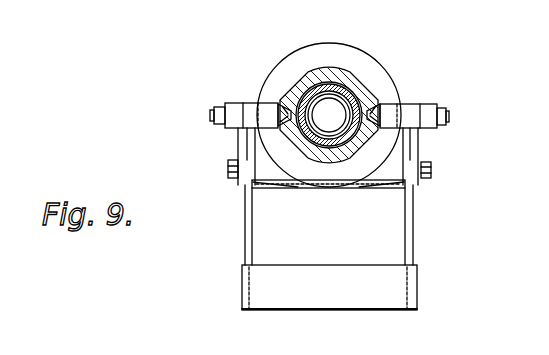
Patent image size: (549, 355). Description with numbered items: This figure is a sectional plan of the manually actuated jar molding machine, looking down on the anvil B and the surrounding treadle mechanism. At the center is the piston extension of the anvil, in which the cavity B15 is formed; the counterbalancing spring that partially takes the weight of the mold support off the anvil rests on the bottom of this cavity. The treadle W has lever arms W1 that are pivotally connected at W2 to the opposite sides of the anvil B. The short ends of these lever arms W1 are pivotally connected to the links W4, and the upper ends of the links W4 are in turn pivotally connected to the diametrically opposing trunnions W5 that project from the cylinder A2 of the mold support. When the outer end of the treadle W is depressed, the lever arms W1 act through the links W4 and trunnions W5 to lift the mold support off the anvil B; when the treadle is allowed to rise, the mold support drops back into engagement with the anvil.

The anvil B is at (385, 65).
The cylinder of the mold support A2 is at (313, 72).
The trunnions W5 is at (418, 80).
The links W4 is at (216, 118).
The cavity B15 is at (328, 165).
The pivotal connection W2 is at (443, 187).
The lever arms W1 is at (440, 250).
The treadle W is at (315, 300).